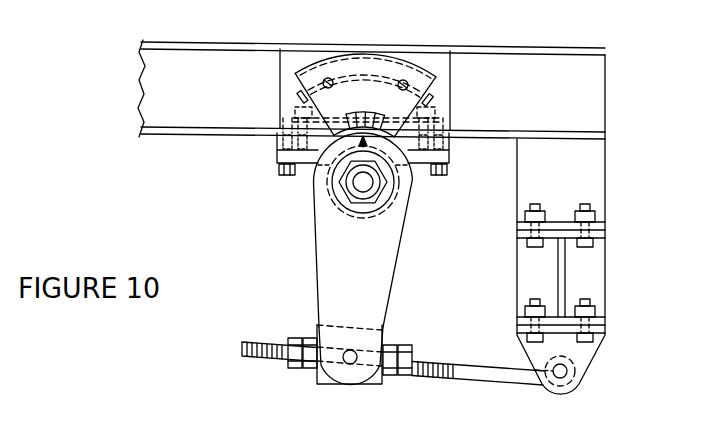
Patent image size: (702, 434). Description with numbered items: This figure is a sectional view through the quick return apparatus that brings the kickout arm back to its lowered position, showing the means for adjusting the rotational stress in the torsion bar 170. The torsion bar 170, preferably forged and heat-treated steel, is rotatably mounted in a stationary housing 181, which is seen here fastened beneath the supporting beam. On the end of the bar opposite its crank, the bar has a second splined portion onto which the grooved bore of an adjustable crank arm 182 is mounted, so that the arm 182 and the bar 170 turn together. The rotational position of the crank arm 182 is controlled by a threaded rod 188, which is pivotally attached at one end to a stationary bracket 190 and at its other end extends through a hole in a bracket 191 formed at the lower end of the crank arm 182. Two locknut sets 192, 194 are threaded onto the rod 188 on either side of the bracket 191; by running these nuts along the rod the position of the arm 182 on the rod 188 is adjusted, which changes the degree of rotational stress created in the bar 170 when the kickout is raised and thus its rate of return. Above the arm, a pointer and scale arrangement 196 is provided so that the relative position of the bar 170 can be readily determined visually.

The torsion bar 170 is at (352, 193).
The stationary housing 181 is at (277, 160).
The adjustable crank arm 182 is at (404, 257).
The threaded rod 188 is at (259, 351).
The stationary bracket 190 is at (598, 353).
The bracket of the crank arm 191 is at (383, 385).
The locknut set 192 is at (297, 338).
The locknut set 194 is at (406, 343).
The pointer and scale arrangement 196 is at (435, 71).